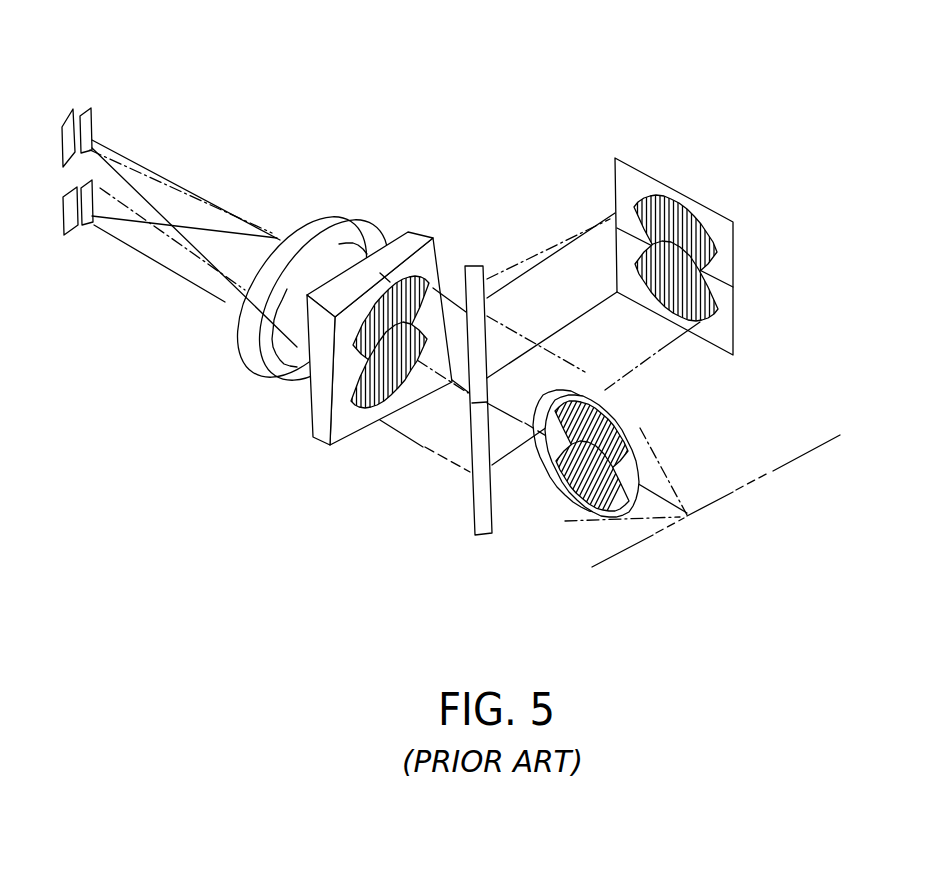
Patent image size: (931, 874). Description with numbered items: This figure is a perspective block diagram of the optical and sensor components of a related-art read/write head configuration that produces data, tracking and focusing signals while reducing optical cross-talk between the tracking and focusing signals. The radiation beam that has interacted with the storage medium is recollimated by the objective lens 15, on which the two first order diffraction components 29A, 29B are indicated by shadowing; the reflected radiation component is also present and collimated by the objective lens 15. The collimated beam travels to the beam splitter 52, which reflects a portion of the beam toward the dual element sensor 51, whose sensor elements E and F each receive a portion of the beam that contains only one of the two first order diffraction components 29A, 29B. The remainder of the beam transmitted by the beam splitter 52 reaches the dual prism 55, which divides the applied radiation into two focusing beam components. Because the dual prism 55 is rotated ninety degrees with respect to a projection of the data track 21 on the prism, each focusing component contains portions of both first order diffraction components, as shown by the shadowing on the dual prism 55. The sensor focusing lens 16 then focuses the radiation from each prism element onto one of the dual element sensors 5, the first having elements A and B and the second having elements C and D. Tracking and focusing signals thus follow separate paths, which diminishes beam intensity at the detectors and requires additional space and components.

The dual element sensors 5 is at (70, 86).
The sensor focusing lens 16 is at (335, 218).
The dual prism 55 is at (428, 238).
The first order diffraction component 29A is at (405, 277).
The first order diffraction component 29B is at (375, 418).
The dual element sensor 51 is at (720, 212).
The beam splitter 52 is at (477, 532).
The objective lens 15 is at (637, 408).
The data track 21 is at (788, 462).